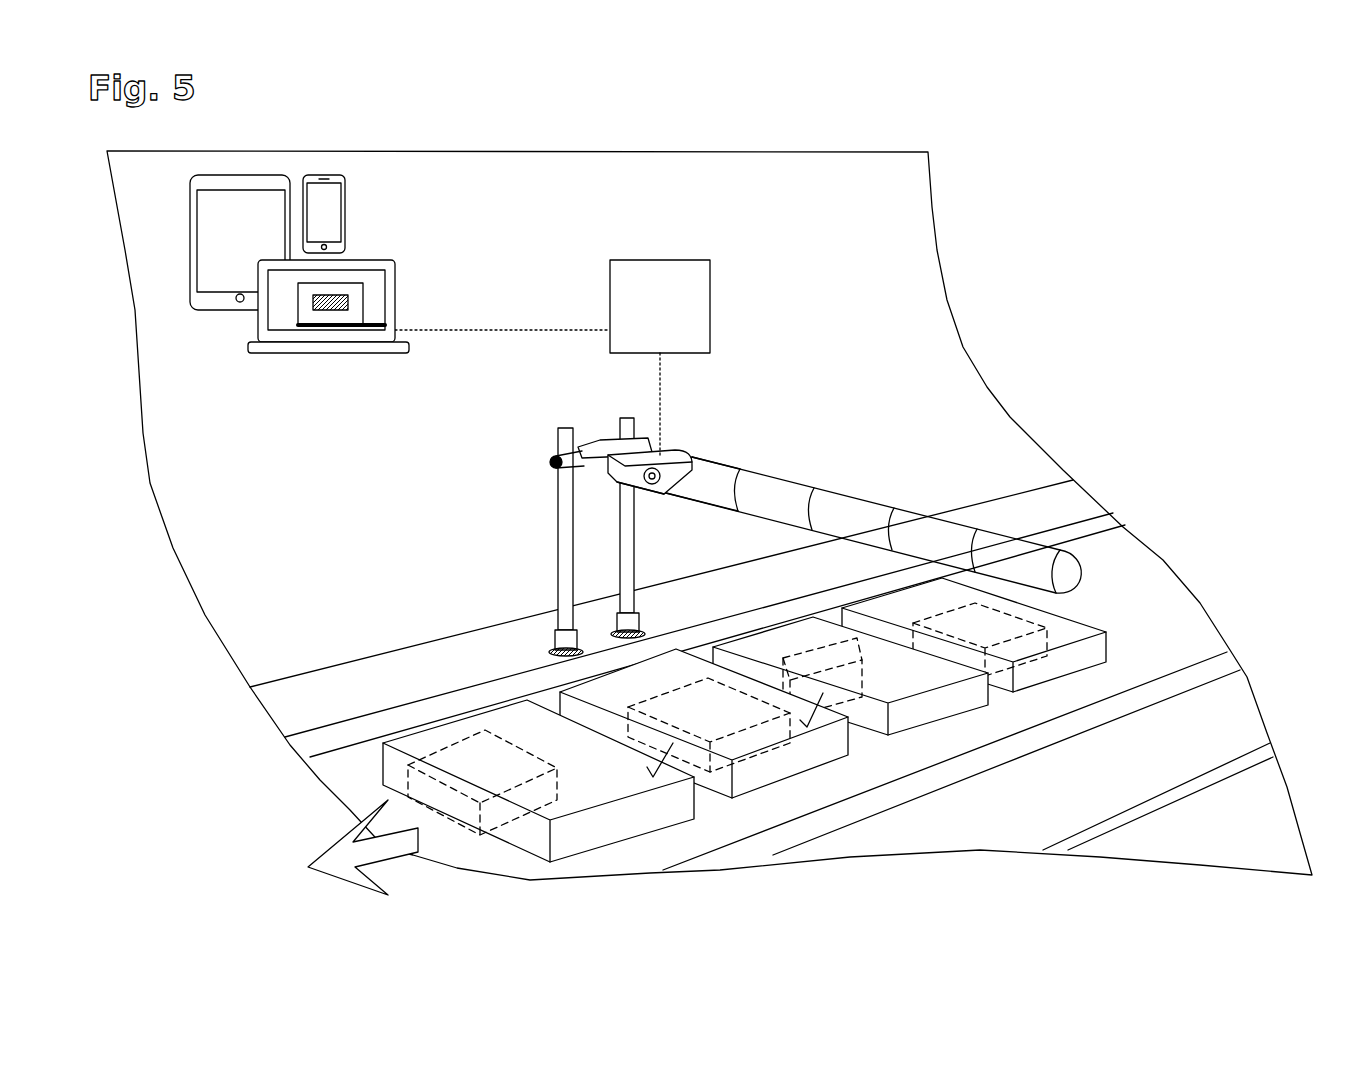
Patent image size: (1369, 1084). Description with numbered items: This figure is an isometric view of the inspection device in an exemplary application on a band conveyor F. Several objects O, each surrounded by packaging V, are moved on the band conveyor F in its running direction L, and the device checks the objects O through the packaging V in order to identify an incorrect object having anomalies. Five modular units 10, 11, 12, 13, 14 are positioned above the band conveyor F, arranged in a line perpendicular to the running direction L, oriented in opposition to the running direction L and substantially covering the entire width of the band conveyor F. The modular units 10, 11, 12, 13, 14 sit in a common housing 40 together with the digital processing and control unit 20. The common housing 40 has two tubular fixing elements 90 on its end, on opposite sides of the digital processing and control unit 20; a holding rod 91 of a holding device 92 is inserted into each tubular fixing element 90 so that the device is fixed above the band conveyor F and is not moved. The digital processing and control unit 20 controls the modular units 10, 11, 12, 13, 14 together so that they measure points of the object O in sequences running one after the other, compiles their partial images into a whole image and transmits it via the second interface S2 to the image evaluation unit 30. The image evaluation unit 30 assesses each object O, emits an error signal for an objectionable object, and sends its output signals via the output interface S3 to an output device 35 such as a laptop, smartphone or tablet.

The modular unit 10 is at (742, 463).
The modular unit 11 is at (794, 473).
The modular unit 12 is at (854, 486).
The modular unit 13 is at (921, 498).
The modular unit 14 is at (999, 518).
The digital processing and control unit 20 is at (632, 432).
The image evaluation unit 30 is at (663, 285).
The output device 35 is at (236, 198).
The common housing 40 is at (722, 497).
The tubular fixing element 90 is at (655, 498).
The holding rod 91 is at (607, 445).
The holding device 92 is at (540, 488).
The second interface S2 is at (663, 395).
The output interface S3 is at (493, 328).
The running direction L is at (322, 882).
The band conveyor F is at (1167, 655).
The object O is at (847, 663).
The packaging V is at (667, 797).